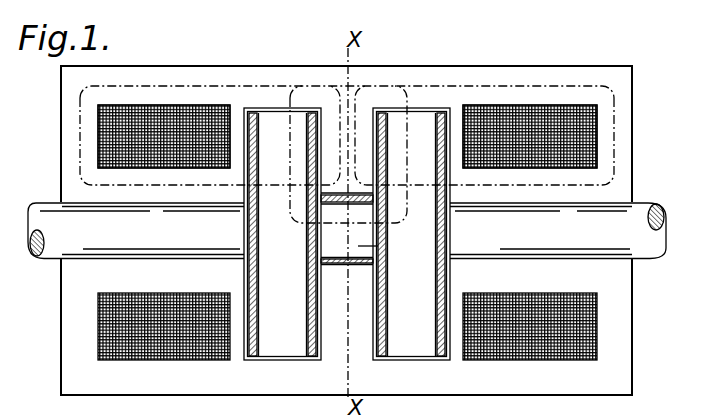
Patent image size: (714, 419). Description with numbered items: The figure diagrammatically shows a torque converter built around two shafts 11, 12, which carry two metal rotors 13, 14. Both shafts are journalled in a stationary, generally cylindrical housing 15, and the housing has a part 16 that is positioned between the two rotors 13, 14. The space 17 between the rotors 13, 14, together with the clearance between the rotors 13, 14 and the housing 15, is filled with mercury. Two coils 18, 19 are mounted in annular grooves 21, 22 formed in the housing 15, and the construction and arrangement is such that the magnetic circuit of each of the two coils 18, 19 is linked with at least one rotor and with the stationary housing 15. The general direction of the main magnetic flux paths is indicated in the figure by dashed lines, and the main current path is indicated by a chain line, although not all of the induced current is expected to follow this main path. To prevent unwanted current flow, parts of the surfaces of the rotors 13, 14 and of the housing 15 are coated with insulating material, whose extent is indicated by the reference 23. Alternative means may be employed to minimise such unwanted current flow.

The shaft 11 is at (57, 220).
The shaft 12 is at (635, 218).
The metal rotor 13 is at (260, 112).
The metal rotor 14 is at (407, 110).
The housing 15 is at (504, 63).
The housing part 16 is at (350, 196).
The space 17 is at (358, 246).
The coil 18 is at (172, 105).
The coil 19 is at (587, 138).
The annular groove 21 is at (132, 105).
The annular groove 22 is at (530, 103).
The insulating material 23 is at (247, 118).